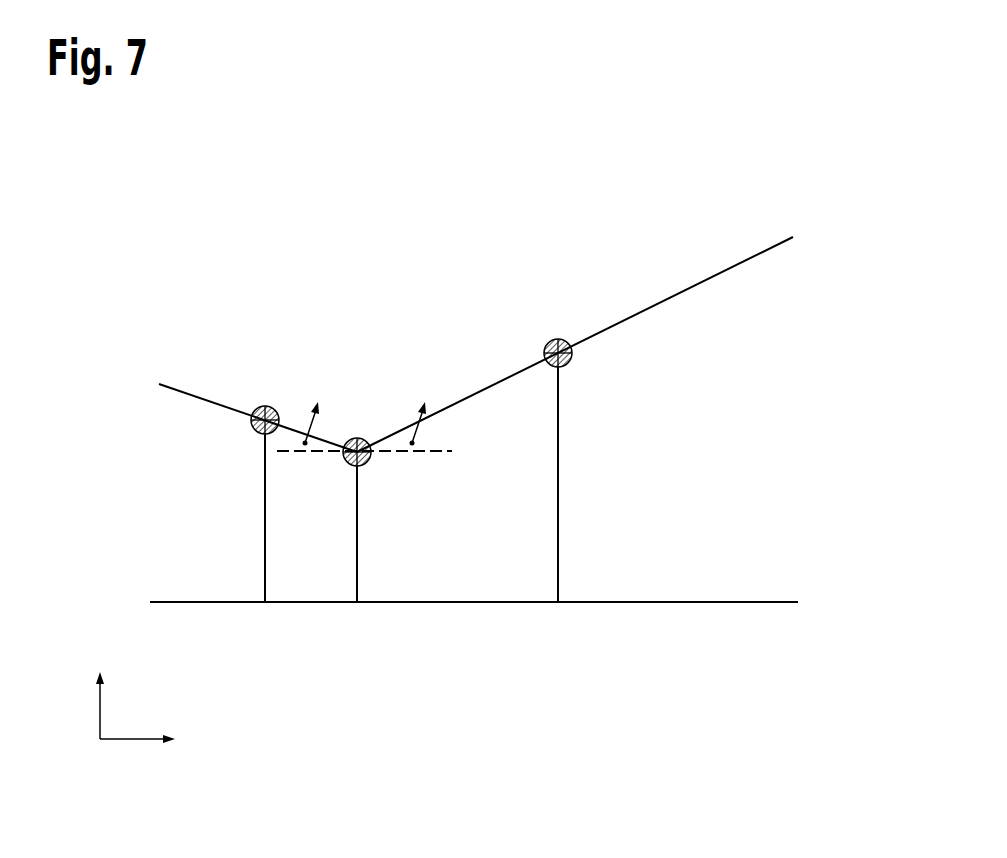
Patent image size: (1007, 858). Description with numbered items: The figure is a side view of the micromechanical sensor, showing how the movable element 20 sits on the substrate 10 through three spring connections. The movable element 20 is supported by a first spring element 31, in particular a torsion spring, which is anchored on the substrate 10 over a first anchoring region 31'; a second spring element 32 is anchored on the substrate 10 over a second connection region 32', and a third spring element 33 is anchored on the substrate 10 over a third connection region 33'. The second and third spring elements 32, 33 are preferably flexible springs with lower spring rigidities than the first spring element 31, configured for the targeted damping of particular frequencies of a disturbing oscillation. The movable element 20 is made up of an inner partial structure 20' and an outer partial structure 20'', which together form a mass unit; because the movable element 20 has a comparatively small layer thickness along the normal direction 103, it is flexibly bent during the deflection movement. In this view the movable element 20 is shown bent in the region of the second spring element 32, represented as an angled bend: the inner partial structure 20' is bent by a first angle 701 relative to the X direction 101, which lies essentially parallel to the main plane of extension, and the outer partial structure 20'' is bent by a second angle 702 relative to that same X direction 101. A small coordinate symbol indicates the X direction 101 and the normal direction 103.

The substrate 10 is at (473, 603).
The movable element 20 is at (476, 324).
The inner partial structure 20' is at (258, 315).
The outer partial structure 20'' is at (575, 315).
The first spring element 31 is at (244, 376).
The second spring element 32 is at (357, 413).
The third spring element 33 is at (553, 315).
The first anchoring region 31' is at (216, 518).
The second connection region 32' is at (402, 534).
The third connection region 33' is at (603, 484).
The first angle 701 is at (312, 398).
The second angle 702 is at (423, 400).
The X direction 101 is at (139, 757).
The normal direction 103 is at (77, 699).